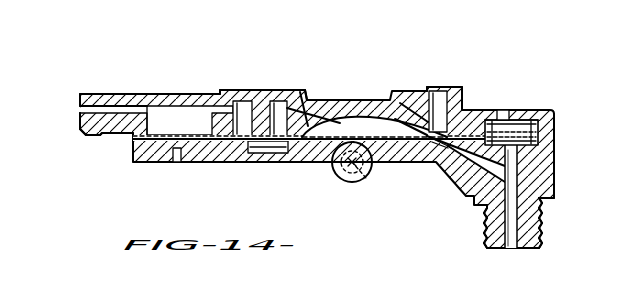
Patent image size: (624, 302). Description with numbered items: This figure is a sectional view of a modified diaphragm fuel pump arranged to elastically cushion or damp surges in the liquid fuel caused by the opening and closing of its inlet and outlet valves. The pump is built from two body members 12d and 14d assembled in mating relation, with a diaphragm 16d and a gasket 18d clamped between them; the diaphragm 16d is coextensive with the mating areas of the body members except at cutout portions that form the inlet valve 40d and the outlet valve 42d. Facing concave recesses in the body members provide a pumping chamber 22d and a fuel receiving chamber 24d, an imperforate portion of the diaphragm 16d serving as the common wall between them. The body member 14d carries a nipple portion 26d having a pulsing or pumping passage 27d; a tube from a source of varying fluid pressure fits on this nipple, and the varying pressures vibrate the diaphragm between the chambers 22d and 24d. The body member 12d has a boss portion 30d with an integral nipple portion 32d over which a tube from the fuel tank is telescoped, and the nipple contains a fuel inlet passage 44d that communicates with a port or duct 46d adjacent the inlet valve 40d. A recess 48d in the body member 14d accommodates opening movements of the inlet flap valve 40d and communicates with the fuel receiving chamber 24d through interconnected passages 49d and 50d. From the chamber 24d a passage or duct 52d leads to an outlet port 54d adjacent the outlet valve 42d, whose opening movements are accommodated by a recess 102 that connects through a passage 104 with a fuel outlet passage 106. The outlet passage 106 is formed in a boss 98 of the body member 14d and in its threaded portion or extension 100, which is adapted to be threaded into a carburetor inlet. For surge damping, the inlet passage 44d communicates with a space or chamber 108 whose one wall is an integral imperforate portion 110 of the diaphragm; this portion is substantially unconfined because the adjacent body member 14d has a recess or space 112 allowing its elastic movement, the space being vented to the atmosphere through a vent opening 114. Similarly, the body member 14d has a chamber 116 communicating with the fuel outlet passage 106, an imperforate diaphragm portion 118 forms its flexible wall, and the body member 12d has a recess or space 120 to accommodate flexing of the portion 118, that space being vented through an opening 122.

The pump body member 12d is at (346, 90).
The pump body member 14d is at (322, 148).
The diaphragm 16d is at (368, 130).
The gasket 18d is at (380, 150).
The pumping chamber 22d is at (327, 168).
The fuel receiving chamber 24d is at (347, 122).
The nipple portion 26d is at (352, 183).
The pulsing or pumping passage 27d is at (366, 180).
The boss portion 30d is at (238, 70).
The nipple portion 32d is at (115, 94).
The inlet valve 40d is at (245, 147).
The outlet valve 42d is at (452, 108).
The fuel inlet passage 44d is at (85, 117).
The port or duct 46d is at (243, 100).
The recess 48d is at (252, 144).
The passage 49d is at (292, 78).
The passage 50d is at (302, 100).
The passage or duct 52d is at (413, 100).
The outlet port 54d is at (438, 95).
The boss 98 is at (553, 187).
The threaded portion or extension 100 is at (543, 230).
The recess 102 is at (440, 153).
The passage 104 is at (467, 173).
The fuel outlet passage 106 is at (511, 250).
The space or chamber 108 is at (190, 118).
The imperforate portion of the diaphragm 110 is at (157, 115).
The recess or space 112 is at (140, 152).
The vent opening 114 is at (177, 163).
The space or chamber 116 is at (537, 143).
The imperforate portion of the diaphragm 118 is at (515, 124).
The recess or space 120 is at (541, 135).
The opening 122 is at (510, 112).